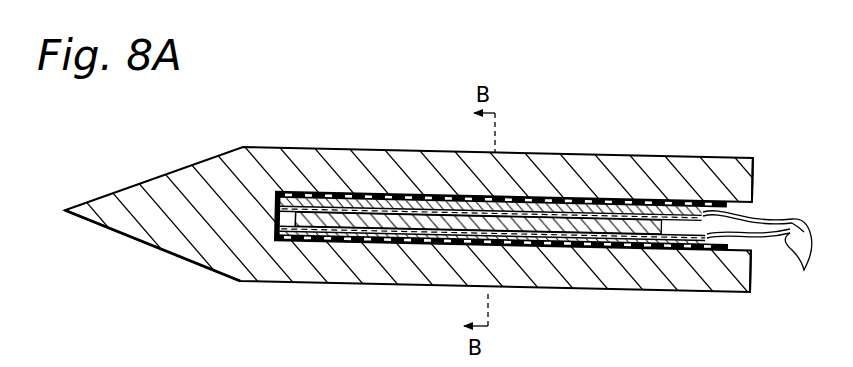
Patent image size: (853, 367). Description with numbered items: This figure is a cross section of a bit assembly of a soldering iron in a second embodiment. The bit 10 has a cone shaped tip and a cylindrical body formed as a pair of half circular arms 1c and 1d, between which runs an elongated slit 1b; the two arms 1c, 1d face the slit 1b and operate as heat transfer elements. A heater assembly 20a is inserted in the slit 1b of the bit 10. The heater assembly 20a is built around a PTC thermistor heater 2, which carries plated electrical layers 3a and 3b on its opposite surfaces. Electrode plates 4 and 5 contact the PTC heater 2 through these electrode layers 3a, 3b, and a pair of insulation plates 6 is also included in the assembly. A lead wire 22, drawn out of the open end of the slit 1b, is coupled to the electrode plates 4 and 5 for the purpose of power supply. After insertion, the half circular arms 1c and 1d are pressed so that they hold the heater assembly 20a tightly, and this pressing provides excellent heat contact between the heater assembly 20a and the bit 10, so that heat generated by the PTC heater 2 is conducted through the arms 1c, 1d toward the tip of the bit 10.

The bit 10 is at (233, 167).
The heater assembly 20a is at (508, 207).
The electrode plate 4 is at (344, 198).
The insulation plate 6 is at (380, 200).
The plated electrical layer 3a is at (522, 214).
The PTC thermistor heater 2 is at (641, 226).
The plated electrical layer 3b is at (605, 233).
The electrode plate 5 is at (350, 243).
The half circular arm 1c is at (755, 177).
The half circular arm 1d is at (753, 272).
The elongated slit 1b is at (762, 208).
The lead wire 22 is at (800, 262).